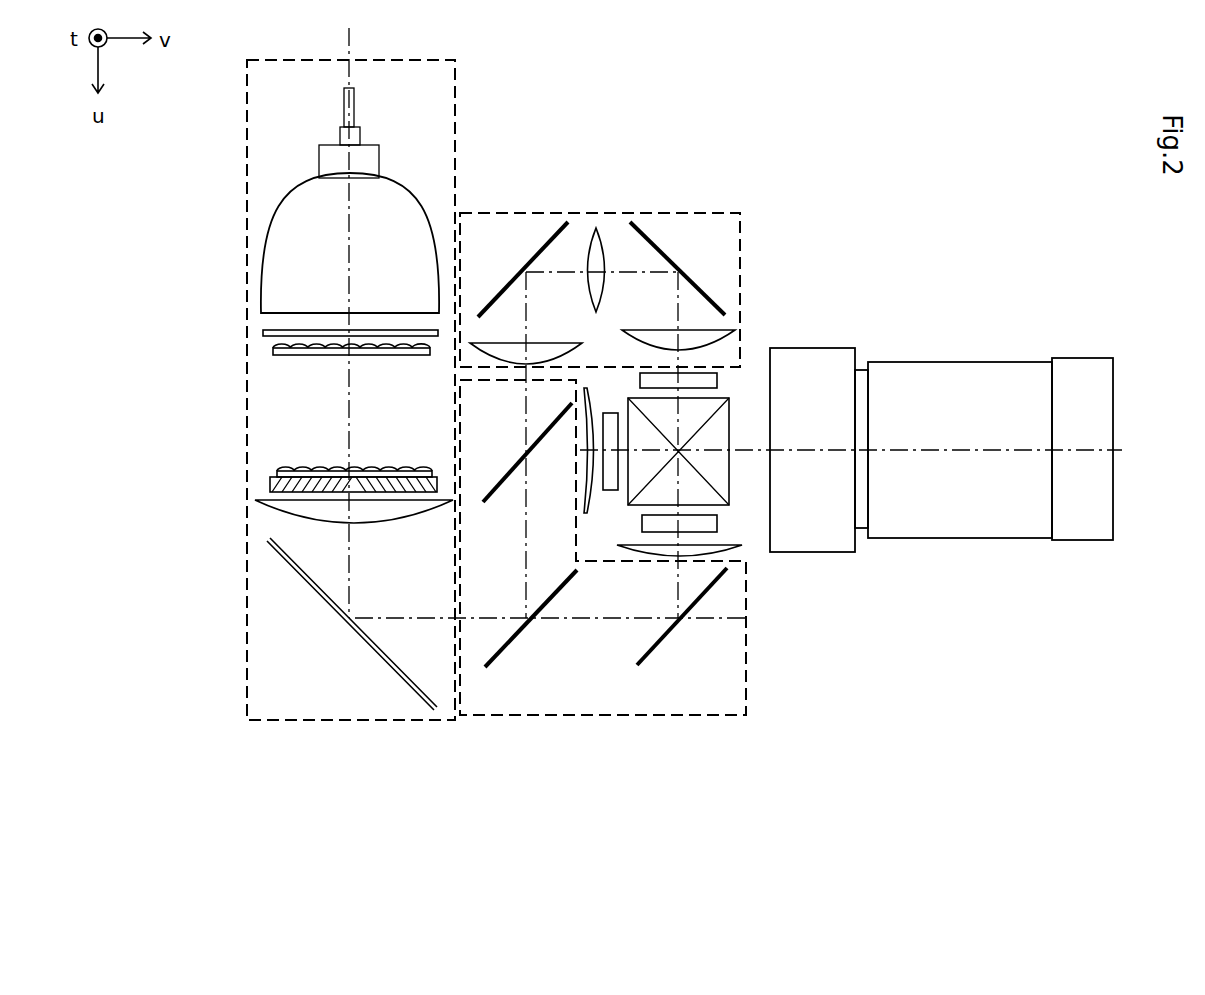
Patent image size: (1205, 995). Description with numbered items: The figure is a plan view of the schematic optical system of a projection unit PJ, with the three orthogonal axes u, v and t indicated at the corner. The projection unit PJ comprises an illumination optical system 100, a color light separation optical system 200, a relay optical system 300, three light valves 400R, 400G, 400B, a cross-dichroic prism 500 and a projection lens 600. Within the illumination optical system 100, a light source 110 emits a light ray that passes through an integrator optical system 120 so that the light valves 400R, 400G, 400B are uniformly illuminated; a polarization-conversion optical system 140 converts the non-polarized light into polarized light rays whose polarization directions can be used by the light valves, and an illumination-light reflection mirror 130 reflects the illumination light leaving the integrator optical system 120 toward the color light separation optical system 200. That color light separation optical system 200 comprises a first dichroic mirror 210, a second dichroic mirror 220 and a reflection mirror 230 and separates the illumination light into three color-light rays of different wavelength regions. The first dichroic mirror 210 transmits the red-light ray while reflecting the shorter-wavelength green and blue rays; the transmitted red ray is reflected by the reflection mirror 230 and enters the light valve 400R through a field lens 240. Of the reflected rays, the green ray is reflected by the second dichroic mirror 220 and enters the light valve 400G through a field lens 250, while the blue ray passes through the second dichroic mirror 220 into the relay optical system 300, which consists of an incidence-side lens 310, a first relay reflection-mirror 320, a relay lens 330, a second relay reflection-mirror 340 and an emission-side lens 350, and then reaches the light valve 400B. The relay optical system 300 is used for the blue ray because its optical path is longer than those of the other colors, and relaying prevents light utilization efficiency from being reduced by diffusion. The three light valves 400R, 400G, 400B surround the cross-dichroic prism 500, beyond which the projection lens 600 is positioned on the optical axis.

The projection unit PJ is at (998, 111).
The illumination optical system 100 is at (282, 722).
The light source 110 is at (254, 238).
The integrator optical system 120 is at (315, 426).
The illumination-light reflection mirror 130 is at (330, 593).
The polarization-conversion optical system 140 is at (437, 478).
The color light separation optical system 200 is at (536, 718).
The first dichroic mirror 210 is at (493, 662).
The second dichroic mirror 220 is at (494, 497).
The reflection mirror 230 is at (642, 662).
The field lens 240 is at (745, 548).
The field lens 250 is at (590, 404).
The relay optical system 300 is at (585, 211).
The incidence-side lens 310 is at (550, 343).
The first relay reflection-mirror 320 is at (510, 278).
The relay lens 330 is at (605, 256).
The second relay reflection-mirror 340 is at (662, 250).
The emission-side lens 350 is at (645, 330).
The light valve for the B-light ray 400B is at (718, 380).
The light valve for the G-light ray 400G is at (612, 492).
The light valve for the R-light ray 400R is at (717, 524).
The cross-dichroic prism 500 is at (729, 400).
The projection lens 600 is at (948, 553).